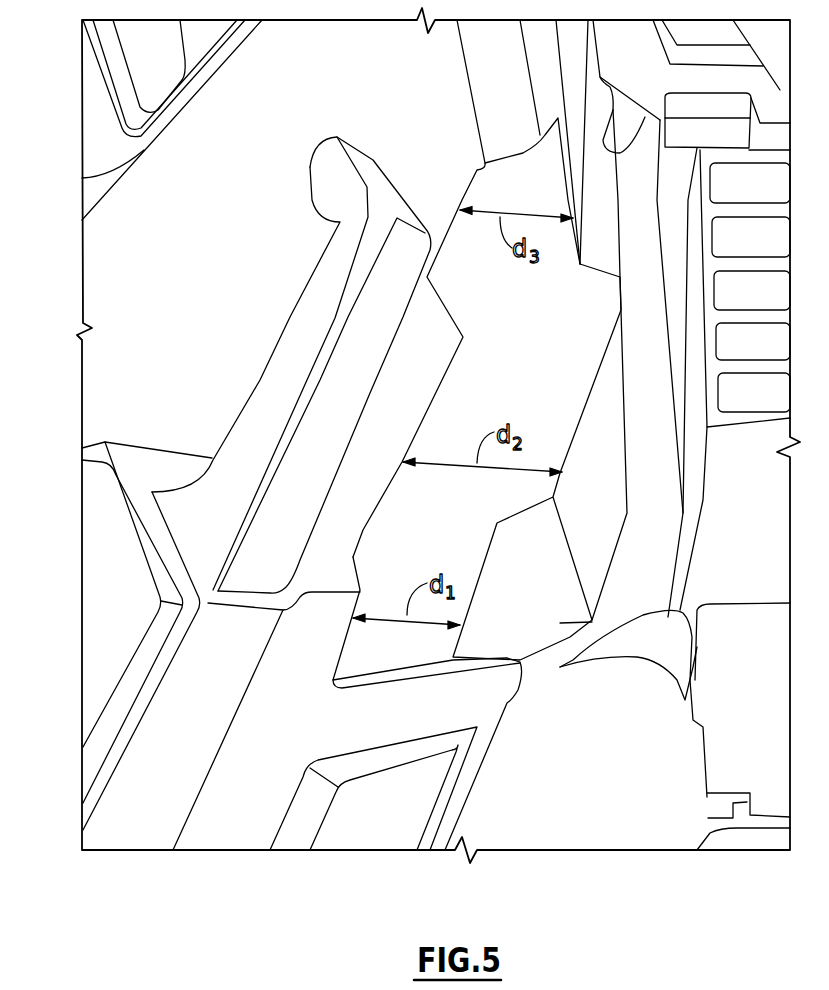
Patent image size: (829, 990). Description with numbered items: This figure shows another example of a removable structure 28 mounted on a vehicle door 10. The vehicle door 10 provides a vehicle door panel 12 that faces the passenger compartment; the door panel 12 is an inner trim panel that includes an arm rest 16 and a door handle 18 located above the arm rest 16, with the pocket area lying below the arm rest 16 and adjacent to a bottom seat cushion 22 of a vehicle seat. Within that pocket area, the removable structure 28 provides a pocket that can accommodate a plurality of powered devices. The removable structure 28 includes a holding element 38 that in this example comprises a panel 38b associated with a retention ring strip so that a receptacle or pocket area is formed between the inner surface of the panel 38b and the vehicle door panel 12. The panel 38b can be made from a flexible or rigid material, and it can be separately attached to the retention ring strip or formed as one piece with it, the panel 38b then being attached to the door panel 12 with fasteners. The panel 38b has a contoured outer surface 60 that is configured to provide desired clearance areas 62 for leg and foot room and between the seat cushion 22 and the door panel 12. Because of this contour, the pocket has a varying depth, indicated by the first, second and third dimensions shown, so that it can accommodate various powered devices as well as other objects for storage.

The vehicle door 10 is at (96, 292).
The vehicle door panel 12 is at (250, 297).
The arm rest 16 is at (215, 537).
The door handle 18 is at (192, 70).
The bottom seat cushion 22 is at (603, 832).
The removable structure 28 is at (306, 699).
The holding element 38 is at (368, 660).
The panel 38b is at (490, 630).
The contoured outer surface 60 is at (610, 406).
The clearance areas 62 is at (660, 590).